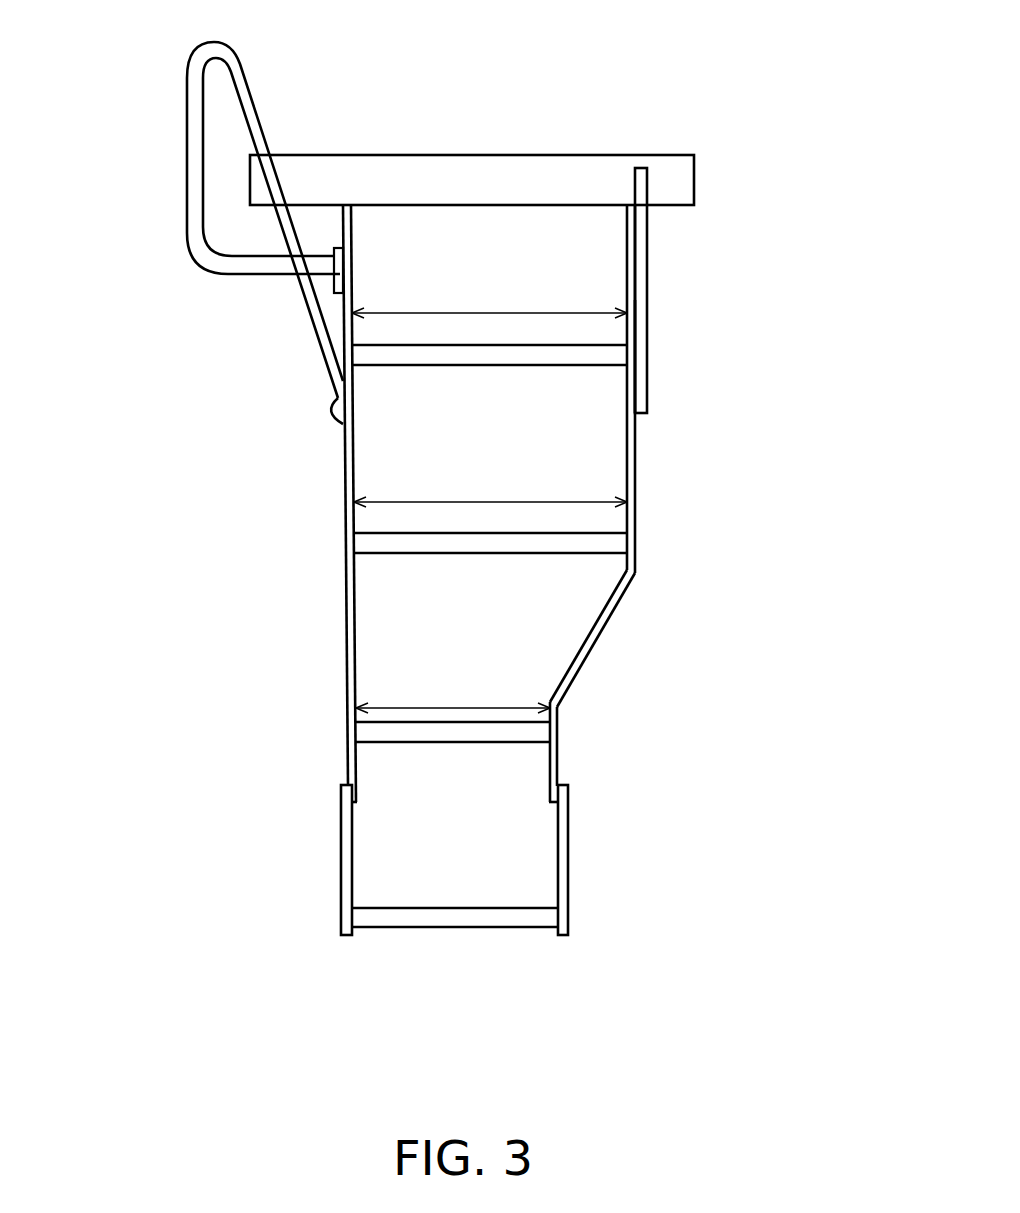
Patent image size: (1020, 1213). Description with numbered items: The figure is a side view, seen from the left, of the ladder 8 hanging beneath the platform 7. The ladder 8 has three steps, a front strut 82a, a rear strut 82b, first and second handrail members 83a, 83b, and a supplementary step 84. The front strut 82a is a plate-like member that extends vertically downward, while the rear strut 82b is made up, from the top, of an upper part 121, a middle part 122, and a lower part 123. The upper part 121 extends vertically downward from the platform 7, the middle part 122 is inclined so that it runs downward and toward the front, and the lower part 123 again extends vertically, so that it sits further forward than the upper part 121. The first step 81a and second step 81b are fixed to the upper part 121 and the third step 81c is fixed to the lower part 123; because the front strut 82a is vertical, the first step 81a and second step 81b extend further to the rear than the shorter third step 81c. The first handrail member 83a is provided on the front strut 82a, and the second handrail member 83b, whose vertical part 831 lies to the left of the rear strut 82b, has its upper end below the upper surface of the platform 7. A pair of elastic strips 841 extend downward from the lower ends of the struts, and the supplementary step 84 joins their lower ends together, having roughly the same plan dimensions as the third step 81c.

The platform 7 is at (598, 163).
The ladder 8 is at (403, 519).
The first handrail member 83a is at (187, 217).
The vertical part 831 is at (638, 245).
The second handrail member 83b is at (648, 358).
The front strut 82a is at (346, 611).
The rear strut 82b is at (570, 687).
The upper part 121 is at (630, 437).
The middle part 122 is at (610, 615).
The lower part 123 is at (557, 767).
The first step 81a is at (428, 365).
The second step 81b is at (428, 553).
The third step 81c is at (417, 742).
The elastic strips 841 is at (341, 853).
The supplementary step 84 is at (472, 935).